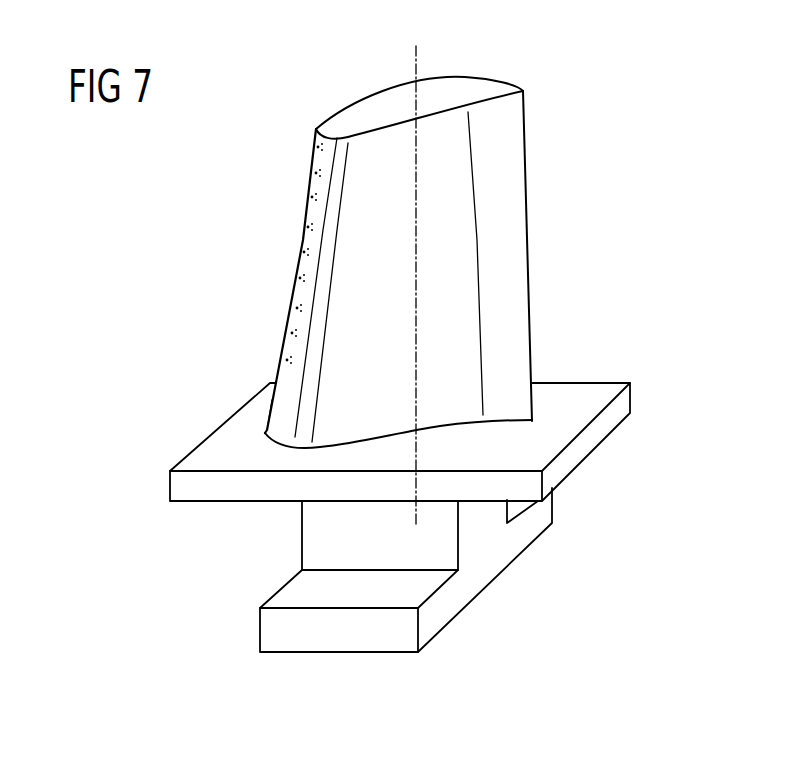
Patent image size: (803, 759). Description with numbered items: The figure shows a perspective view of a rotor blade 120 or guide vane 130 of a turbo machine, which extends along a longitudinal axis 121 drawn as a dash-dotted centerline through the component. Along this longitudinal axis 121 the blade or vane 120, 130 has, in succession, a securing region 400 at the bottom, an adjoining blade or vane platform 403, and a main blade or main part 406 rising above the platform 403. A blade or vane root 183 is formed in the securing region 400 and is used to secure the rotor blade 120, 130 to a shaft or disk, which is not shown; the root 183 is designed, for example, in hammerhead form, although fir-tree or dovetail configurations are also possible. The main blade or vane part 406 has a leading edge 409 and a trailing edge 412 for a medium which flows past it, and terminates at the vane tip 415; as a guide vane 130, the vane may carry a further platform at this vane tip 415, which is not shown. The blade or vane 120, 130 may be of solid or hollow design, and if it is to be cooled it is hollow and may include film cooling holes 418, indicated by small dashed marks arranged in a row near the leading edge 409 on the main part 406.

The rotor blade 120 is at (337, 254).
The guide vane 130 is at (196, 280).
The trailing edge 412 is at (537, 222).
The vane tip 415 is at (328, 122).
The leading edge 409 is at (292, 203).
The main blade or main part 406 is at (277, 409).
The film cooling holes 418 is at (316, 147).
The longitudinal axis 121 is at (412, 73).
The blade or vane platform 403 is at (597, 435).
The securing region 400 is at (480, 582).
The blade or vane root 183 is at (288, 597).